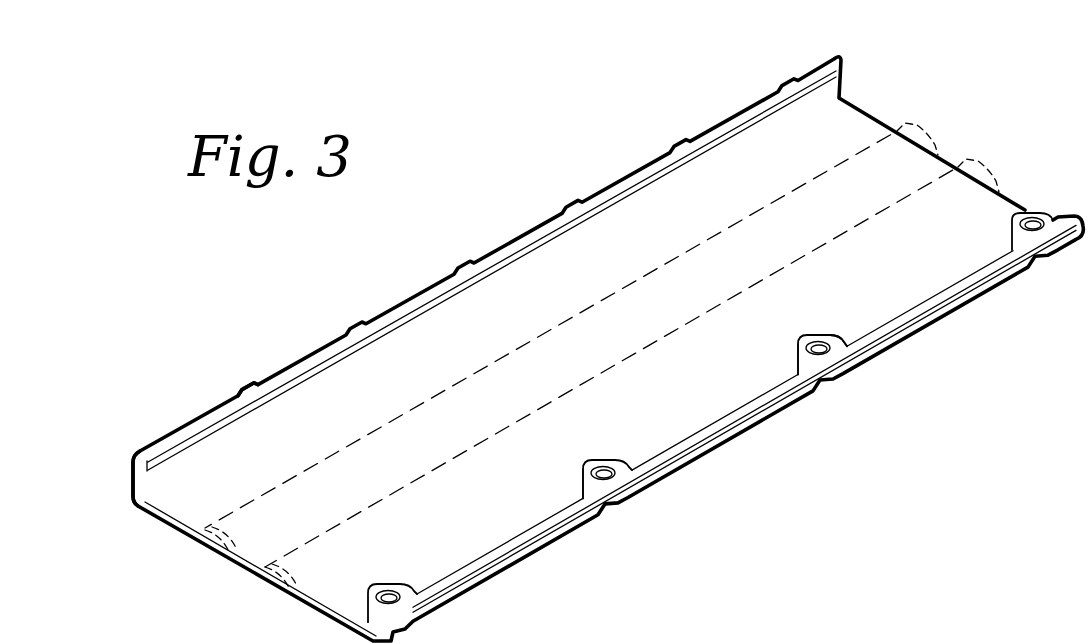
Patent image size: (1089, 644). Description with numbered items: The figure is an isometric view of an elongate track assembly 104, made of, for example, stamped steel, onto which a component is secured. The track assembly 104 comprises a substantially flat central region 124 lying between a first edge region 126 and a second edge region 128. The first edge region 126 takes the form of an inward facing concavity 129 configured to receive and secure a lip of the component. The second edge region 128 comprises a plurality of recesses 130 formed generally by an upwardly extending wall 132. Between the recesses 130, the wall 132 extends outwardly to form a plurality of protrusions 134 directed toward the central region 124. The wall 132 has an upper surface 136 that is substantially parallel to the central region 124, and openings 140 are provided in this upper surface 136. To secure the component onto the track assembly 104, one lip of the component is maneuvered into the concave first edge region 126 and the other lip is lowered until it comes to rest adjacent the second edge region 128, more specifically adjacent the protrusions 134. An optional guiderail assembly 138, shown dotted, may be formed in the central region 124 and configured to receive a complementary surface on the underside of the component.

The track assembly 104 is at (340, 324).
The central region 124 is at (255, 562).
The first edge region 126 is at (250, 390).
The second edge region 128 is at (549, 556).
The inward facing concavity 129 is at (152, 478).
The recesses 130 is at (680, 436).
The upwardly extending wall 132 is at (585, 492).
The protrusions 134 is at (589, 463).
The upper surface 136 is at (620, 479).
The guiderail assembly 138 is at (531, 392).
The openings 140 is at (840, 368).